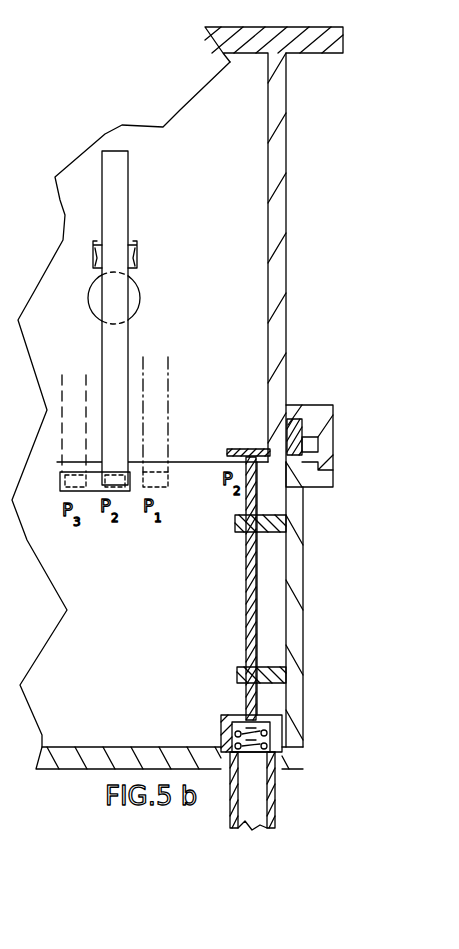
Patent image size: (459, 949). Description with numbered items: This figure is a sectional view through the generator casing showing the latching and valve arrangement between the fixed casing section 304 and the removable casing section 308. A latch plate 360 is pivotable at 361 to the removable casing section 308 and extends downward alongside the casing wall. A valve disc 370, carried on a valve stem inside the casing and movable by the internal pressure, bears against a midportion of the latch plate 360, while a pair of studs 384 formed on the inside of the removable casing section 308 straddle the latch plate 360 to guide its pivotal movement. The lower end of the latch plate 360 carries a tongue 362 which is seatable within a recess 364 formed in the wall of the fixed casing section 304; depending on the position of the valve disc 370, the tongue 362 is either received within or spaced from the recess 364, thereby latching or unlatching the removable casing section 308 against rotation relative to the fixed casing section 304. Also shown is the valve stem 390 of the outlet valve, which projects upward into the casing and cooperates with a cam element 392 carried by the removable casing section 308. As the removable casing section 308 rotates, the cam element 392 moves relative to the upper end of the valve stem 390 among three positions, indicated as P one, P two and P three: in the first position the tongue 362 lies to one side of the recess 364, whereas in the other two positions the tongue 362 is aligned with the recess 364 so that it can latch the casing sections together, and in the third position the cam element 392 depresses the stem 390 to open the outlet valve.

The fixed casing section 304 is at (311, 612).
The removable casing section 308 is at (285, 106).
The latch plate 360 is at (122, 166).
The pivot 361 is at (138, 256).
The tongue 362 is at (118, 492).
The recess 364 is at (92, 492).
The valve disc 370 is at (138, 298).
The studs 384 is at (131, 264).
The valve stem 390 is at (252, 598).
The cam element 392 is at (250, 449).